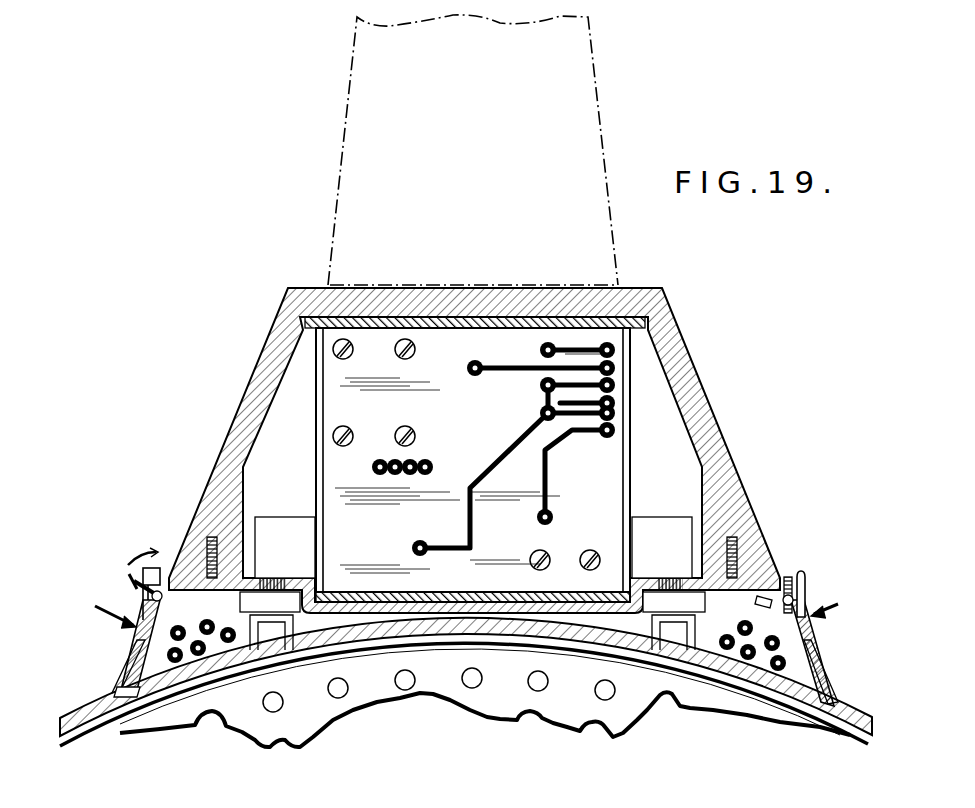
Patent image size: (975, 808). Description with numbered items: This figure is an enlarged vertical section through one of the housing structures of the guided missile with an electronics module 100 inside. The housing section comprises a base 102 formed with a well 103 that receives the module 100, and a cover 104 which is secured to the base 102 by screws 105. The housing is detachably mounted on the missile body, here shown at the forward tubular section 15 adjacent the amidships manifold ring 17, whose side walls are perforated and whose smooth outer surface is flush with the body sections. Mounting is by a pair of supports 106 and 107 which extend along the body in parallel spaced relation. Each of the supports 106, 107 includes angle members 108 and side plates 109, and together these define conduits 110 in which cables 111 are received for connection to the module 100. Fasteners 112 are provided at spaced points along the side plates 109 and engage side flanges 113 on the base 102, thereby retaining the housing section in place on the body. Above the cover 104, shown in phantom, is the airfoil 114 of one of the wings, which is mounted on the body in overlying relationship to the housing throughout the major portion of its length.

The forward tubular section 15 is at (121, 727).
The amidships manifold ring 17 is at (485, 705).
The electronics module 100 is at (630, 440).
The base 102 is at (482, 596).
The well 103 is at (540, 596).
The cover 104 is at (672, 318).
The screws 105 is at (220, 540).
The support 106 is at (99, 611).
The support 107 is at (840, 605).
The angle members 108 is at (130, 684).
The side plates 109 is at (130, 660).
The conduits 110 is at (146, 640).
The cables 111 is at (186, 627).
The fasteners 112 is at (128, 581).
The side flanges 113 is at (158, 567).
The airfoil 114 is at (383, 157).